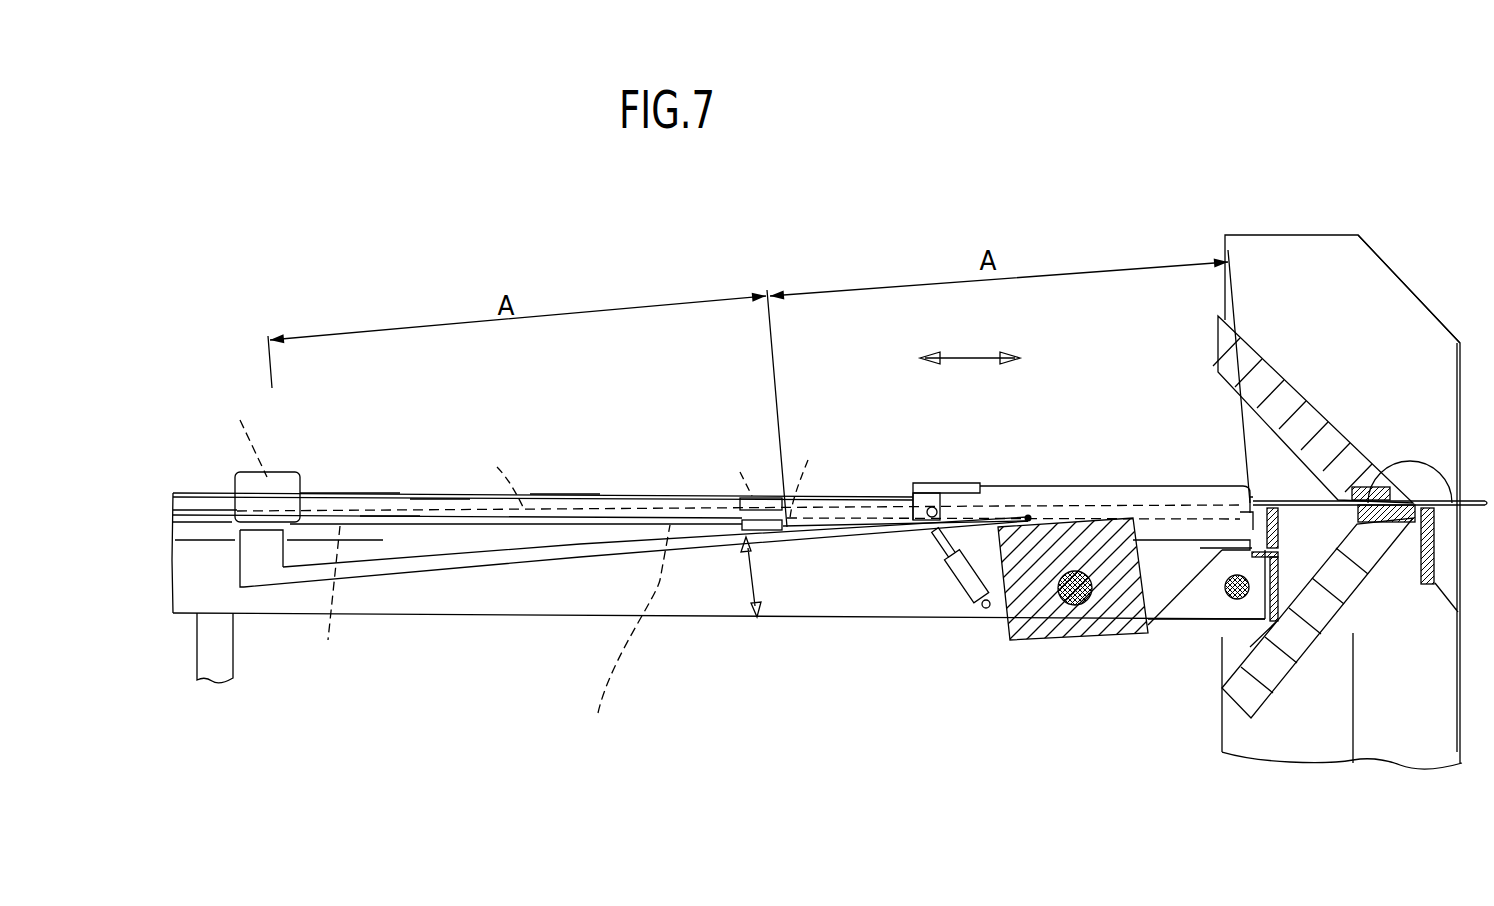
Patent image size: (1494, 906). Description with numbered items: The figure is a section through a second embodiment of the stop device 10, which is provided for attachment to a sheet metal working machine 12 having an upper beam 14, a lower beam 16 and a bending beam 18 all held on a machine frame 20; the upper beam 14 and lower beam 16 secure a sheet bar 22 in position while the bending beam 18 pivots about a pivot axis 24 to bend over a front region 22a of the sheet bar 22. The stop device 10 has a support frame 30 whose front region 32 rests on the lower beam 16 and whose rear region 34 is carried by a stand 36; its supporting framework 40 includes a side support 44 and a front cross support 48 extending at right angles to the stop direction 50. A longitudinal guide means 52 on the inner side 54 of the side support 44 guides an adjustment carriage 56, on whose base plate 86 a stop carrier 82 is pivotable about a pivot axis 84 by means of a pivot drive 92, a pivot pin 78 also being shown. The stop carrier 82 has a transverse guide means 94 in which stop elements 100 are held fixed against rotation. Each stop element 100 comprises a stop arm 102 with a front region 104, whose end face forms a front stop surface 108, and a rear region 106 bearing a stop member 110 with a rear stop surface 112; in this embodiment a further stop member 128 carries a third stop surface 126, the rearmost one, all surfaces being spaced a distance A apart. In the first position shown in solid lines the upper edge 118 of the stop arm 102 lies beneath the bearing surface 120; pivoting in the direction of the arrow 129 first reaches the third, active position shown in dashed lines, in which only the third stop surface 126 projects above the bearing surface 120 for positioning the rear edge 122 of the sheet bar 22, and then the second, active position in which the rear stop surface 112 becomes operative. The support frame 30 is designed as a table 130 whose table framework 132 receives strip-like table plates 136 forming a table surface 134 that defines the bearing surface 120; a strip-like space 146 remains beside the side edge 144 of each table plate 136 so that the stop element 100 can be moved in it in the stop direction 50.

The stop device 10 is at (691, 476).
The sheet metal working machine 12 is at (1391, 226).
The upper beam 14 is at (1328, 437).
The lower beam 16 is at (1363, 565).
The bending beam 18 is at (1430, 585).
The machine frame 20 is at (1417, 307).
The sheet bar 22 is at (1292, 500).
The front region 22a is at (1458, 503).
The pivot axis 24 is at (1413, 503).
The support frame 30 is at (850, 620).
The front region 32 is at (1255, 608).
The rear region 34 is at (185, 603).
The stand 36 is at (230, 673).
The supporting framework 40 is at (563, 620).
The side support 44 is at (710, 612).
The front cross support 48 is at (1278, 587).
The stop direction 50 is at (965, 357).
The longitudinal guide means 52 is at (390, 516).
The inner side 54 is at (443, 503).
The adjustment carriage 56 is at (1038, 483).
The pivot pin 78 is at (1237, 597).
The stop carrier 82 is at (1030, 628).
The pivot axis 84 is at (1075, 605).
The base plate 86 is at (1095, 490).
The pivot drive 92 is at (977, 590).
The transverse guide means 94 is at (1024, 514).
The stop element 100 is at (700, 545).
The stop arm 102 is at (593, 546).
The front region 104 is at (1160, 490).
The rear region 106 is at (337, 582).
The front stop surface 108 is at (1259, 393).
The stop member 110 is at (768, 522).
The rear stop surface 112 is at (784, 527).
The upper edge 118 is at (497, 546).
The bearing surface 120 is at (1304, 506).
The rear edge 122 is at (1240, 490).
The third stop surface 126 is at (300, 518).
The stop member 128 is at (258, 524).
The arrow 129 is at (773, 612).
The table 130 is at (477, 620).
The table framework 132 is at (418, 610).
The table surface 134 is at (563, 492).
The table plates 136 is at (192, 485).
The side edge 144 is at (350, 490).
The strip-like space 146 is at (837, 500).